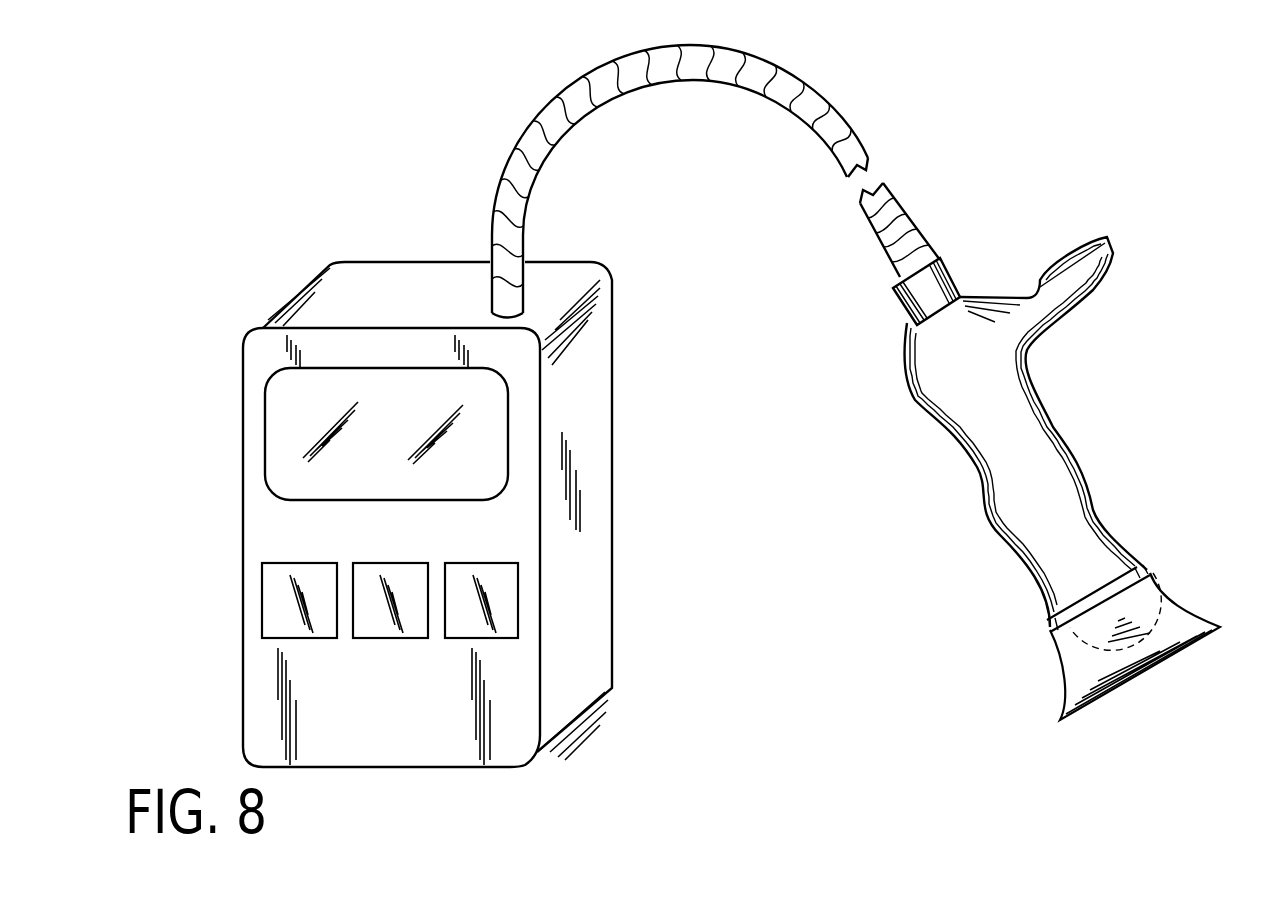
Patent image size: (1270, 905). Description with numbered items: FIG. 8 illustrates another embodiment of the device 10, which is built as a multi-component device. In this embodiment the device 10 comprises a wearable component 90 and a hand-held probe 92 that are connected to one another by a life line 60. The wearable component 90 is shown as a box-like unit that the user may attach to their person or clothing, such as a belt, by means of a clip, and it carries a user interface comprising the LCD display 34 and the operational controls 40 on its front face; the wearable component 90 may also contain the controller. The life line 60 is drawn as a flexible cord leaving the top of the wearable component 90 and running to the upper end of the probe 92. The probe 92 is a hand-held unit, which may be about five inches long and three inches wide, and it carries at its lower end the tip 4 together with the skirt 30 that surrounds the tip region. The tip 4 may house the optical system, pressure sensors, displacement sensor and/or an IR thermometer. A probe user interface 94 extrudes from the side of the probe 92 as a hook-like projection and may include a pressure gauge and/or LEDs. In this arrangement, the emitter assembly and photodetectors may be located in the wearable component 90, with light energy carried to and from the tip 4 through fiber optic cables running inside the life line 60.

The device 10 is at (897, 133).
The tip 4 is at (1080, 633).
The skirt 30 is at (1123, 688).
The LCD display 34 is at (282, 458).
The operational controls 40 is at (272, 613).
The life line 60 is at (520, 152).
The wearable component 90 is at (593, 652).
The hand-held probe 92 is at (993, 470).
The probe user interface 94 is at (1060, 258).